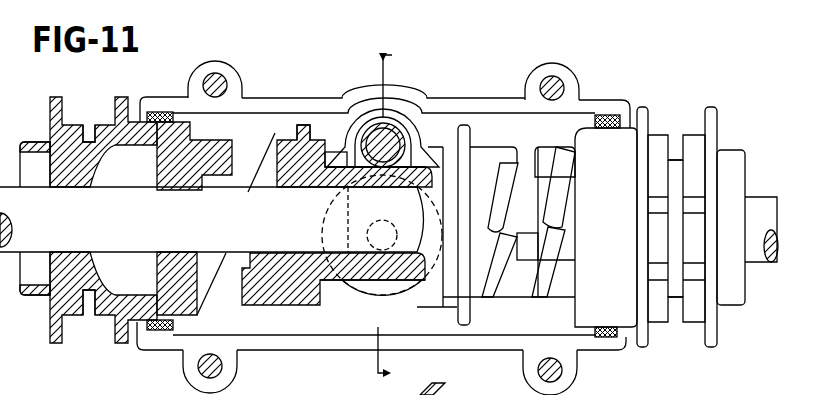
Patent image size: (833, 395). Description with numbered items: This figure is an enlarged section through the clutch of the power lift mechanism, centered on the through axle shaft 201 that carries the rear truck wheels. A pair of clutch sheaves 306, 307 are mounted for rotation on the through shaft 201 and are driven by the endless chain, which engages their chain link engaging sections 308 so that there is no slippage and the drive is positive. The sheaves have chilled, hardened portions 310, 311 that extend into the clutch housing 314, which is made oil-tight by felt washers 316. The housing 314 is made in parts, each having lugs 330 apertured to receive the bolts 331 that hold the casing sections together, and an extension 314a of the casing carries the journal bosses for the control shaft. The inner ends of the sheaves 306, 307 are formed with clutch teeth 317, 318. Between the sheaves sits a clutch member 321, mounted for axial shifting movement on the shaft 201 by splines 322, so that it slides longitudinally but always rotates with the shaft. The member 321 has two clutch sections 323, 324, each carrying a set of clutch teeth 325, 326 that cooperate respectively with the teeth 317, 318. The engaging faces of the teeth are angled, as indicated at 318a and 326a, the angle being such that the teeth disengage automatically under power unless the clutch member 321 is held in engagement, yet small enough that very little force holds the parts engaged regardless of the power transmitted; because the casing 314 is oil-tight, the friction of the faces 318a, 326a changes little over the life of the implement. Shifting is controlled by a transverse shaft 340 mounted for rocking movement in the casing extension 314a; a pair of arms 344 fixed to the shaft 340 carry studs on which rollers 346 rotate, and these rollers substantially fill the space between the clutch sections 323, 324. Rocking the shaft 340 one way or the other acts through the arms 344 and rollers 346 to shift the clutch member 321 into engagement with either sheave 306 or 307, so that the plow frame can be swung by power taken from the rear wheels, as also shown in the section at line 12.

The section line 12- 12 is at (398, 206).
The through axle shaft 201 is at (162, 219).
The clutch sheave 306 is at (49, 123).
The clutch sheave 307 is at (757, 107).
The chain link engaging sections 308 is at (88, 143).
The chilled portion 310 is at (192, 128).
The chilled portion 311 is at (590, 150).
The clutch housing 314 is at (480, 98).
The extension of the clutch casing 314a is at (328, 384).
The felt washers 316 is at (154, 112).
The clutch teeth 317 is at (268, 162).
The clutch teeth 318 is at (555, 196).
The angled tooth face 318a is at (548, 155).
The clutch member 321 is at (335, 155).
The splines 322 is at (305, 187).
The clutch section 323 is at (313, 138).
The clutch section 324 is at (450, 150).
The clutch teeth 325 is at (266, 160).
The clutch teeth 326 is at (487, 150).
The angled tooth face 326a is at (498, 293).
The lugs 330 is at (212, 64).
The bolts 331 is at (218, 78).
The transverse shaft 340 is at (393, 126).
The arms 344 is at (412, 136).
The rollers 346 is at (385, 296).